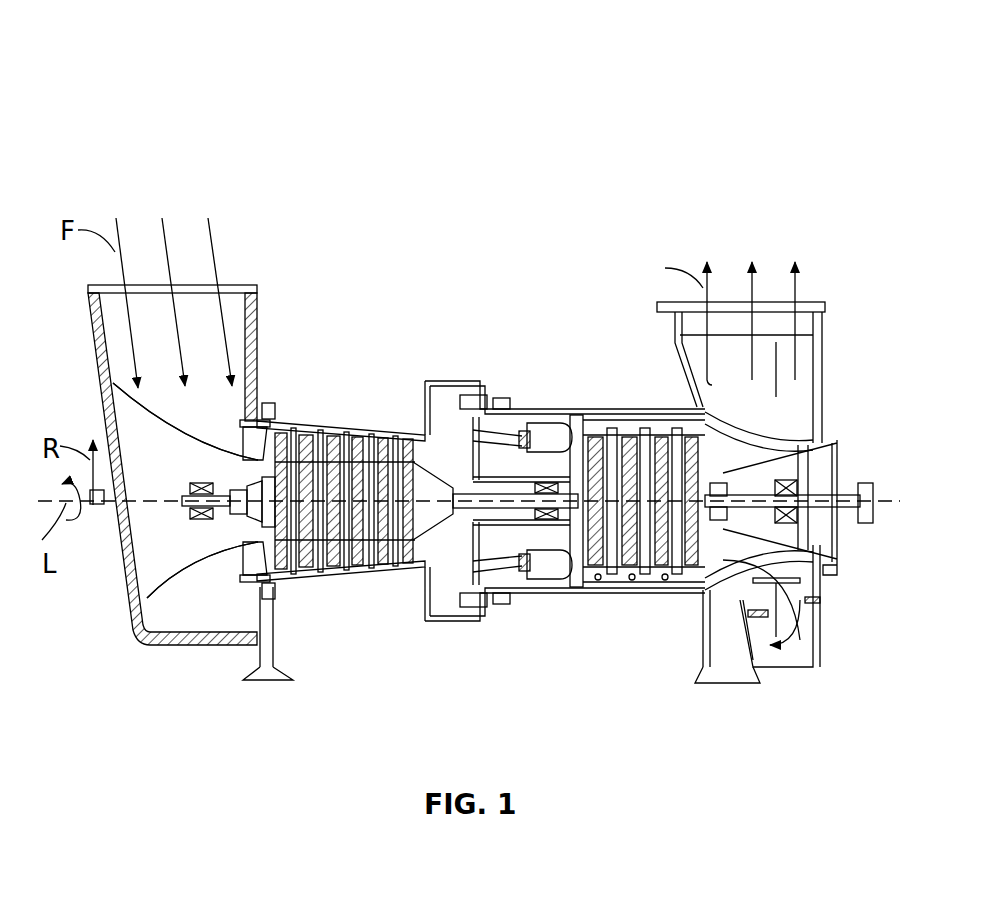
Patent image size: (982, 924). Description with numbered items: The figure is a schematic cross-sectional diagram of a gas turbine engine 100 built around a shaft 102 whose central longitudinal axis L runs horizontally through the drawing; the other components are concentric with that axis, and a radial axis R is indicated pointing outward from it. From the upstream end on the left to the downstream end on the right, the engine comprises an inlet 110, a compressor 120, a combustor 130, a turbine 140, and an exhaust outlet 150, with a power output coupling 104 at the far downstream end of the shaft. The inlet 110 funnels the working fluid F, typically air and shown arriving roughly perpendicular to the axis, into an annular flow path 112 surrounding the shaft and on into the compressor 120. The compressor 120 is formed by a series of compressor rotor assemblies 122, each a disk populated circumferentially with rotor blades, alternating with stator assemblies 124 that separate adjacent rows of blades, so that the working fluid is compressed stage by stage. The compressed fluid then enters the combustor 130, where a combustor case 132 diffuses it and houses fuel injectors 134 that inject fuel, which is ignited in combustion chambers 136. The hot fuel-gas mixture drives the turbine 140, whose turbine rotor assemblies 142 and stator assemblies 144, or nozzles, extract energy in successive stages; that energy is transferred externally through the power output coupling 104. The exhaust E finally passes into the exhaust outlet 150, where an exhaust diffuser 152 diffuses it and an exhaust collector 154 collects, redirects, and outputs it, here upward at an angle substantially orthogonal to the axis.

The gas turbine engine 100 is at (122, 42).
The shaft 102 is at (182, 487).
The power output coupling 104 is at (870, 483).
The inlet 110 is at (256, 195).
The annular flow path 112 is at (243, 432).
The compressor 120 is at (456, 195).
The compressor rotor assembly 122 is at (330, 577).
The stator assembly 124 is at (343, 442).
The combustor 130 is at (566, 195).
The combustor case 132 is at (524, 428).
The fuel injector 134 is at (512, 426).
The combustion chamber 136 is at (540, 424).
The turbine 140 is at (702, 195).
The turbine rotor assembly 142 is at (677, 574).
The stator assembly 144 is at (690, 428).
The exhaust outlet 150 is at (850, 218).
The exhaust diffuser 152 is at (728, 415).
The exhaust collector 154 is at (680, 343).